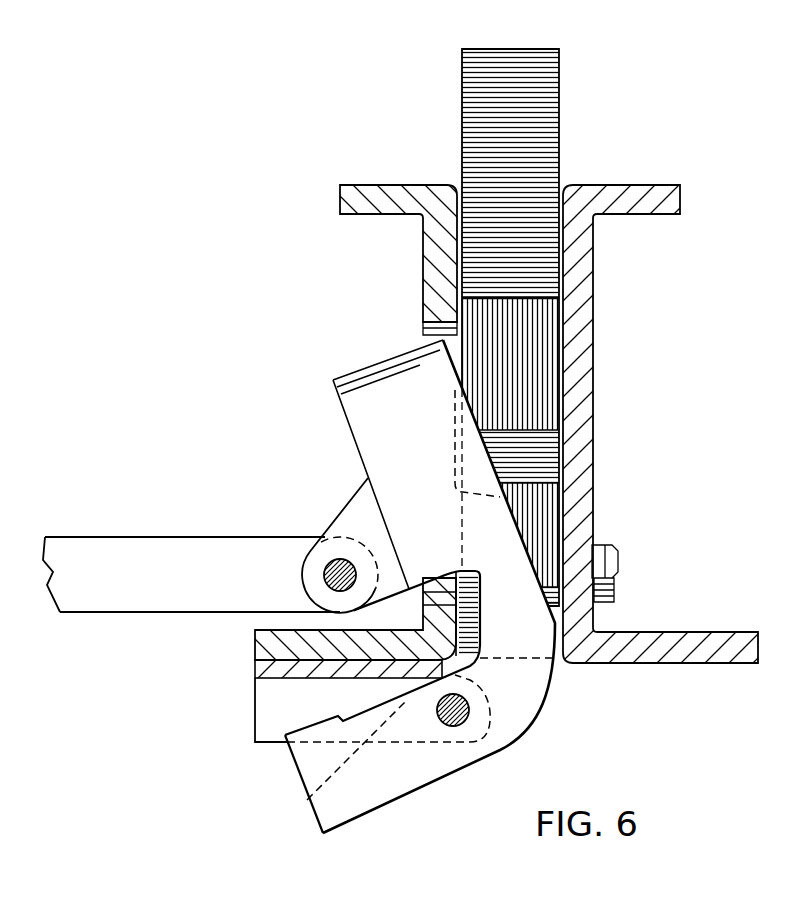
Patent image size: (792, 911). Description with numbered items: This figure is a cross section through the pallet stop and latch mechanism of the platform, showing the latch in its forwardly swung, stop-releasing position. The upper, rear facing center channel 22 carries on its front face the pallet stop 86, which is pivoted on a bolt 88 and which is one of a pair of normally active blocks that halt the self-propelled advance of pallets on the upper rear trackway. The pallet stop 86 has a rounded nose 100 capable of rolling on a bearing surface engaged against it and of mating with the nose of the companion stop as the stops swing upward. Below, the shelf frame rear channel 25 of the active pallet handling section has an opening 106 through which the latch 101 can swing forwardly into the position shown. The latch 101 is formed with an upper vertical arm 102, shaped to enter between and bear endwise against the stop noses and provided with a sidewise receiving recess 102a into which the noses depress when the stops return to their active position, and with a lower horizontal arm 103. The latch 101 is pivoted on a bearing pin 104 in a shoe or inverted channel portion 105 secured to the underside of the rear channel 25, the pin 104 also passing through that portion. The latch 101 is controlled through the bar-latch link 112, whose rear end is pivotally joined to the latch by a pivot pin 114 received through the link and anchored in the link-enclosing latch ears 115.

The pallet stop 86 is at (557, 128).
The shelf frame rear channel 25 is at (442, 245).
The opening 106 is at (425, 336).
The upper center channel 22 is at (587, 340).
The bolt 88 is at (604, 573).
The upper vertical arm 102 is at (358, 412).
The recess 102a is at (455, 432).
The rounded nose 100 is at (550, 458).
The latch ears 115 is at (355, 503).
The bar-latch link 112 is at (137, 540).
The pivot pin 114 is at (325, 575).
The latch 101 is at (553, 718).
The lower horizontal arm 103 is at (447, 765).
The bearing pin 104 is at (468, 703).
The inverted channel portion 105 is at (267, 703).